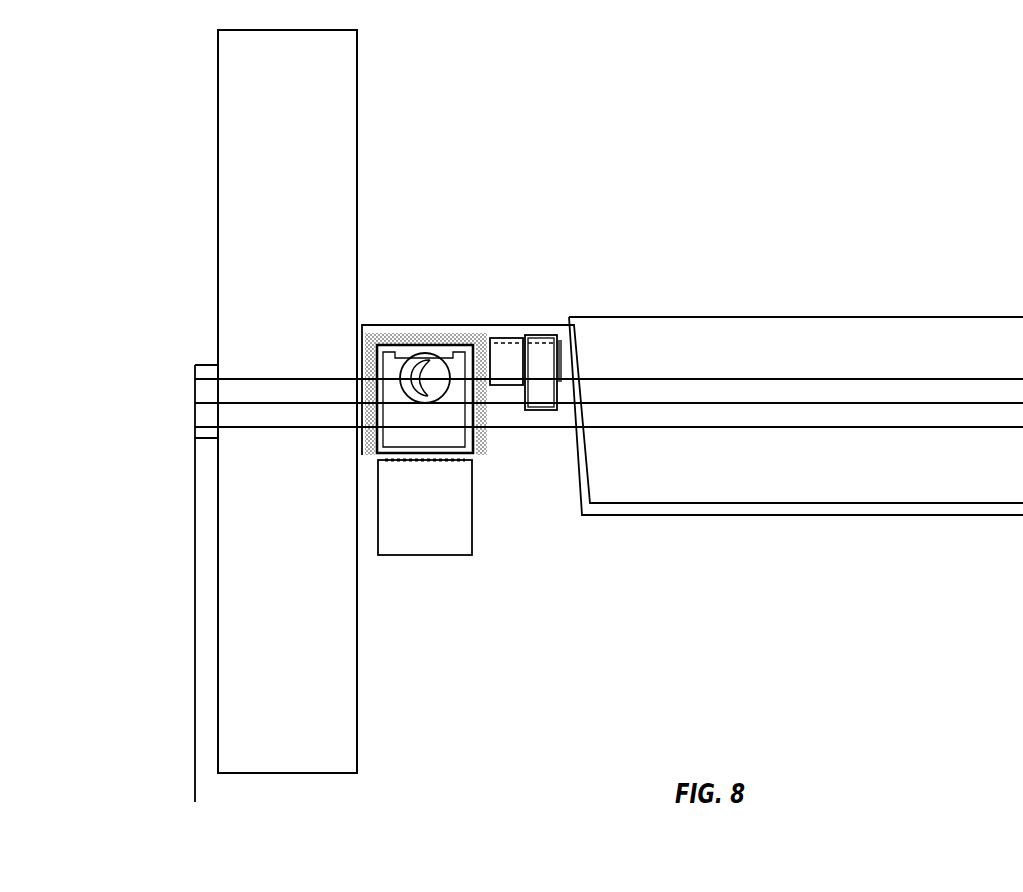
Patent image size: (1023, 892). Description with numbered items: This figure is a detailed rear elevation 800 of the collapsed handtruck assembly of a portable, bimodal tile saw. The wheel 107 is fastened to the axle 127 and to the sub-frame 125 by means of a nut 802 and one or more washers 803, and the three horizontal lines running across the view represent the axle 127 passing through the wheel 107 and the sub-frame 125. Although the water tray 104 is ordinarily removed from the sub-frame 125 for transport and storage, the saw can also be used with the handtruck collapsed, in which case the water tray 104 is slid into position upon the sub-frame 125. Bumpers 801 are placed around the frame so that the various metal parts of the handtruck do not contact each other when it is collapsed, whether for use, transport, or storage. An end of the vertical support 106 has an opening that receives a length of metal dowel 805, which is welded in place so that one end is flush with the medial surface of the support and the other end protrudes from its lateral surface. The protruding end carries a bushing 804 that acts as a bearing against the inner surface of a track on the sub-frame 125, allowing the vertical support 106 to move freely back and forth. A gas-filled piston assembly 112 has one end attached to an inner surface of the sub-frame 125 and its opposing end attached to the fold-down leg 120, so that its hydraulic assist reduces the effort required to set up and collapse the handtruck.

The detailed rear elevation 800 is at (926, 100).
The wheel 107 is at (348, 138).
The nut 802 is at (200, 365).
The axle 127 is at (687, 387).
The vertical support 106 is at (548, 330).
The water tray 104 is at (665, 508).
The washers 803 is at (378, 340).
The bumpers 801 is at (470, 340).
The sub-frame 125 is at (392, 344).
The gas-filled piston assembly 112 is at (430, 397).
The fold-down leg 120 is at (490, 336).
The bushing 804 is at (516, 330).
The metal dowel 805 is at (562, 360).